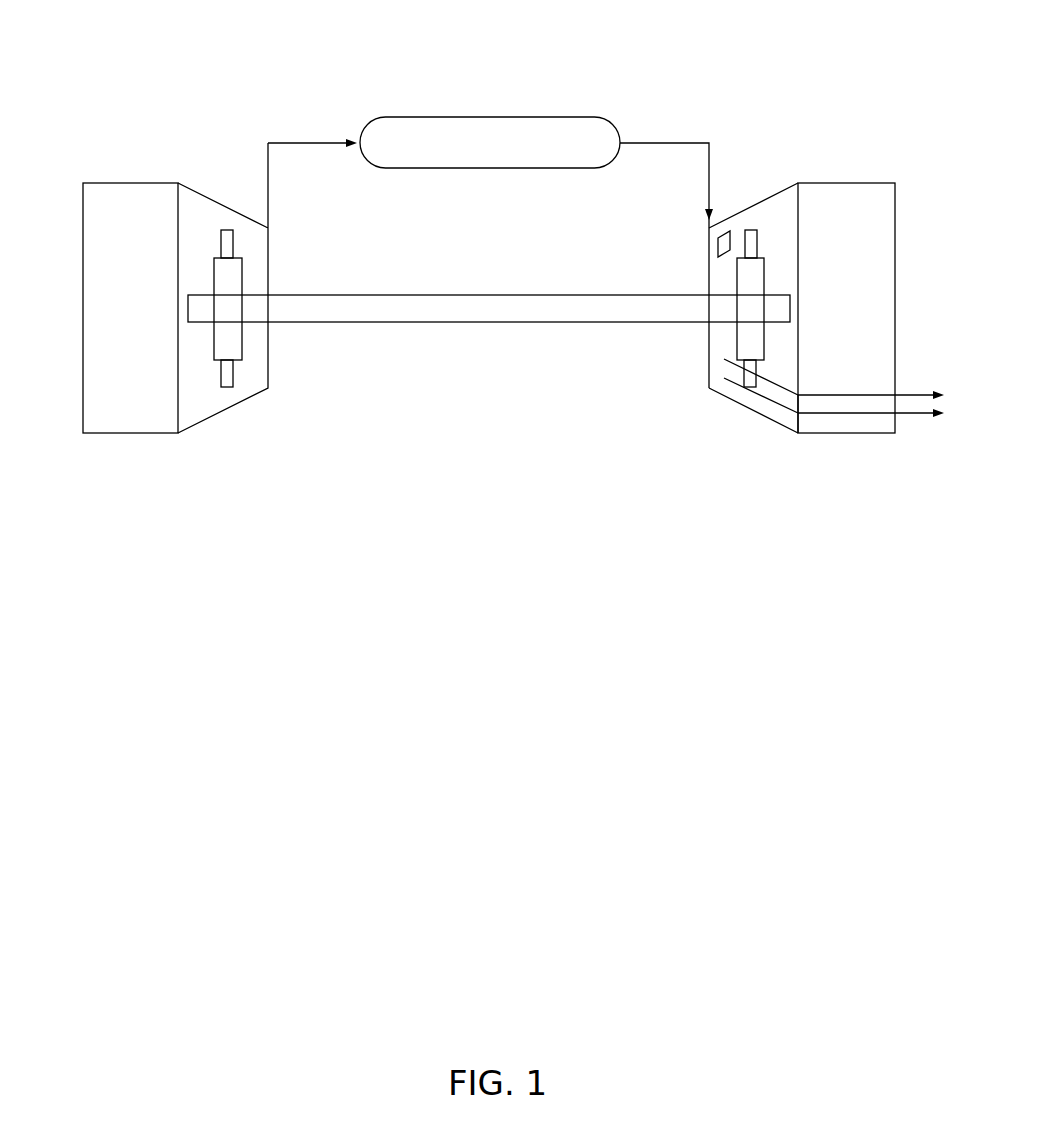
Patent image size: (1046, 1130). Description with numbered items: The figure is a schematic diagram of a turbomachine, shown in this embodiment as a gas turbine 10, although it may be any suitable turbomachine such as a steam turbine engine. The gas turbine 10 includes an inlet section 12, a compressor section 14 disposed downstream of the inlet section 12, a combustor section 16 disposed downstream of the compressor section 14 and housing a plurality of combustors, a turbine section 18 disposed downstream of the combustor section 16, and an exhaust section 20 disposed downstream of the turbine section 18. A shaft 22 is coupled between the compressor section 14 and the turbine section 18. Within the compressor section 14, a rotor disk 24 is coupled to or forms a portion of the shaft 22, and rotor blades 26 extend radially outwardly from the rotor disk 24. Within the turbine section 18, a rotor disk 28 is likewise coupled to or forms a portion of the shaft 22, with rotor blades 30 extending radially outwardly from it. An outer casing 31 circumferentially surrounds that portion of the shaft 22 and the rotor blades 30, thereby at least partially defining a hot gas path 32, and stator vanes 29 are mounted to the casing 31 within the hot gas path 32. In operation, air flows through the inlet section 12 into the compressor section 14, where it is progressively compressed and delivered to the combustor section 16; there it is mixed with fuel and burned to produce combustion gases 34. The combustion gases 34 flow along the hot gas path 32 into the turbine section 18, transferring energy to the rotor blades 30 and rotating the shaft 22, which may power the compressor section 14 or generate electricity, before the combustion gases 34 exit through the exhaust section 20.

The gas turbine 10 is at (296, 56).
The inlet section 12 is at (123, 182).
The compressor section 14 is at (207, 193).
The combustor section 16 is at (558, 117).
The turbine section 18 is at (780, 190).
The exhaust section 20 is at (857, 183).
The shaft 22 is at (490, 322).
The rotor disk 24 is at (215, 277).
The rotor blades 26 is at (221, 243).
The rotor disk 28 is at (747, 340).
The stator vanes 29 is at (718, 248).
The rotor blades 30 is at (750, 230).
The outer casing 31 is at (788, 430).
The hot gas path 32 is at (742, 420).
The combustion gases 34 is at (673, 143).